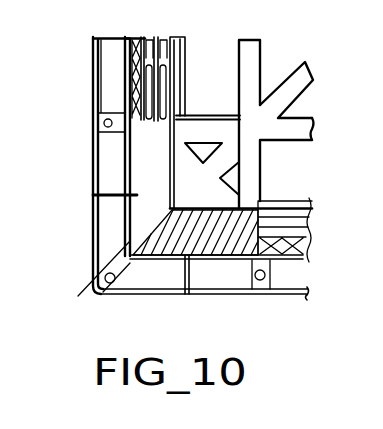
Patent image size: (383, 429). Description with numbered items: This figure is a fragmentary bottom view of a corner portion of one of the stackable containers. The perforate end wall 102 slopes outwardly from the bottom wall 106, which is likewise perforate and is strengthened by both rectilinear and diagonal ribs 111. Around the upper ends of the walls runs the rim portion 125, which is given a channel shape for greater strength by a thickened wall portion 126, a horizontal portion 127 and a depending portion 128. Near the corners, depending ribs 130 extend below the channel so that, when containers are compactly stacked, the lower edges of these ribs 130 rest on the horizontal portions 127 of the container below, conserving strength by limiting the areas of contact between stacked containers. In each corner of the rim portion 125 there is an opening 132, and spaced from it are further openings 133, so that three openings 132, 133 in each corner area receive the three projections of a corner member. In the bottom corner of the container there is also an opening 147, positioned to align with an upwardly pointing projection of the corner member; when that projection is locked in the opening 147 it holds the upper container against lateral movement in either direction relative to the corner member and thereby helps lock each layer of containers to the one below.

The perforate end wall 102 is at (157, 37).
The bottom wall 106 is at (307, 64).
The rectilinear and diagonal ribs 111 is at (251, 40).
The rim portion 125 is at (150, 295).
The thickened wall portion 126 is at (131, 172).
The horizontal portion 127 is at (108, 182).
The depending portion 128 is at (93, 253).
The depending rib 130 is at (189, 281).
The corner opening 132 is at (88, 275).
The opening 133 is at (262, 281).
The opening 147 is at (203, 143).